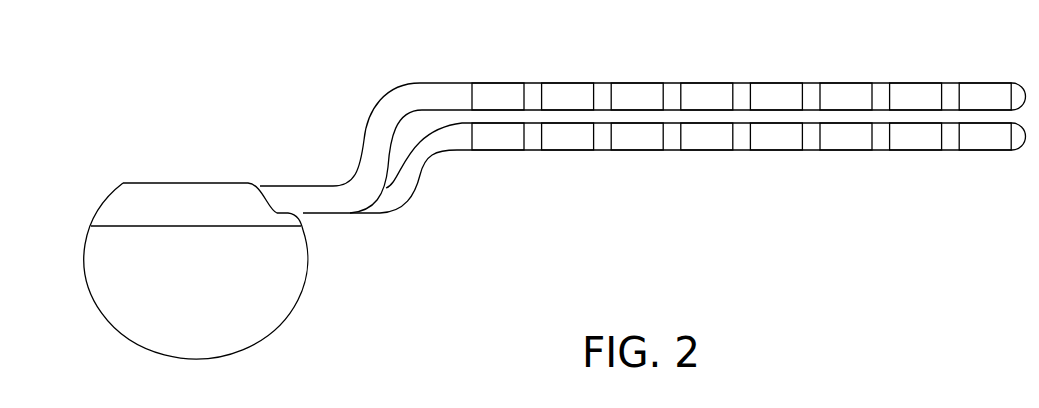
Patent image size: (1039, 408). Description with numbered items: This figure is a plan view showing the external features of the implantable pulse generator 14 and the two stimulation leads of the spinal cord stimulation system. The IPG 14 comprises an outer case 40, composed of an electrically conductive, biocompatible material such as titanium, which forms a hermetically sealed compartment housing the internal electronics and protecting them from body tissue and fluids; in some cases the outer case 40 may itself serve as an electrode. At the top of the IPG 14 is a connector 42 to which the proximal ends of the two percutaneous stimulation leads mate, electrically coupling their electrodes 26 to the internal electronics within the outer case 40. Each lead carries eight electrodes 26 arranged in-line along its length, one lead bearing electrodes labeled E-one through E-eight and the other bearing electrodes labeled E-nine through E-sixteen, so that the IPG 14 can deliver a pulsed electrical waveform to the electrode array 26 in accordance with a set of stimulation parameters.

The implantable pulse generator 14 is at (133, 152).
The outer case 40 is at (302, 270).
The connector 42 is at (203, 186).
The electrodes 26 is at (560, 83).